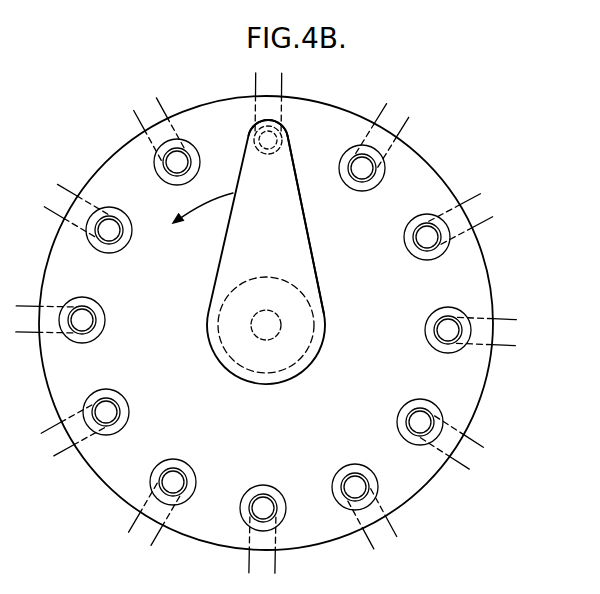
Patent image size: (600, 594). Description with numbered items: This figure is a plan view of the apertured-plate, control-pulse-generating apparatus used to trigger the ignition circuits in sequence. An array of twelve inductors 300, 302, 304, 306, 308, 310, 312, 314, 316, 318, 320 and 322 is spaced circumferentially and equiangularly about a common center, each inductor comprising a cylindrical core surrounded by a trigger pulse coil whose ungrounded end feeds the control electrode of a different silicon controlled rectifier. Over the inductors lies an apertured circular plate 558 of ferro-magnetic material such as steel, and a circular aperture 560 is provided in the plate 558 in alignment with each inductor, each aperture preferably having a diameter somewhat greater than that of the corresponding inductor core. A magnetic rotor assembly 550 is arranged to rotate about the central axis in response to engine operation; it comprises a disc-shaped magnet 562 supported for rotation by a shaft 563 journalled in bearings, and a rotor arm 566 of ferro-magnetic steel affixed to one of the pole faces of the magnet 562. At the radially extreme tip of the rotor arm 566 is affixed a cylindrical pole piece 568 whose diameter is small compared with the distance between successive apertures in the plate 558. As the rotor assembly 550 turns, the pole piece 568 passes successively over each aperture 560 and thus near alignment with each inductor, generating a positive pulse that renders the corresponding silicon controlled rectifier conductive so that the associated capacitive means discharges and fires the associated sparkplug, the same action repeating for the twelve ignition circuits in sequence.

The apertured circular plate 558 is at (482, 141).
The magnetic rotor assembly 550 is at (213, 290).
The rotor arm 566 is at (310, 262).
The disc-shaped magnet 562 is at (220, 338).
The shaft 563 is at (269, 300).
The circular aperture 560 is at (288, 137).
The inductor 304 is at (283, 143).
The cylindrical pole piece 568 is at (257, 149).
The inductor 300 is at (427, 240).
The inductor 302 is at (362, 172).
The inductor 306 is at (181, 160).
The inductor 308 is at (109, 229).
The inductor 310 is at (84, 317).
The inductor 312 is at (108, 410).
The inductor 314 is at (174, 480).
The inductor 316 is at (262, 506).
The inductor 318 is at (355, 484).
The inductor 320 is at (419, 420).
The inductor 322 is at (442, 331).